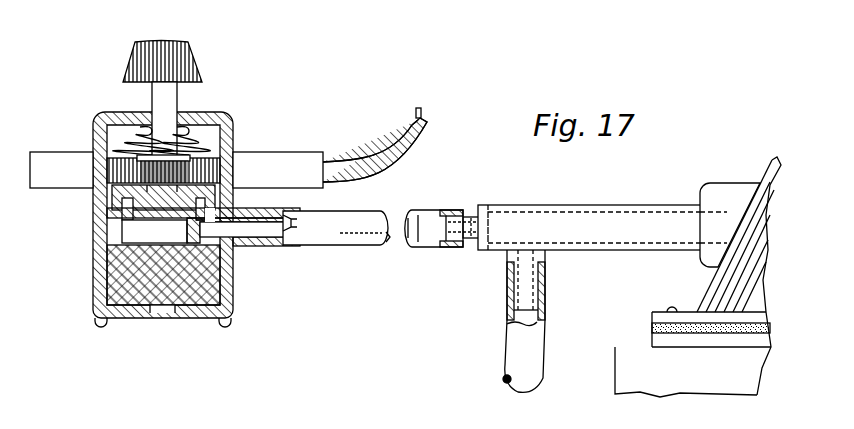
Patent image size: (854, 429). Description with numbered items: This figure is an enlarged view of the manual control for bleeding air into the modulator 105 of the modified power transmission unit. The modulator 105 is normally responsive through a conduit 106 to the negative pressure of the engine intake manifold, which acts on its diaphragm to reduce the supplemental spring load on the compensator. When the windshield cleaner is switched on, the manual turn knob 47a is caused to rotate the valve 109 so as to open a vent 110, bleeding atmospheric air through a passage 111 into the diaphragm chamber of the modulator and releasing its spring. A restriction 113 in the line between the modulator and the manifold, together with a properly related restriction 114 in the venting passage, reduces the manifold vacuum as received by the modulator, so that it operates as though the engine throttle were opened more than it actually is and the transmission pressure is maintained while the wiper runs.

The manual turn knob 47a is at (198, 63).
The valve 109 is at (207, 203).
The vent 110 is at (120, 215).
The passage 111 is at (343, 230).
The restriction 114 is at (445, 212).
The restriction 113 is at (508, 265).
The conduit 106 is at (518, 349).
The modulator 105 is at (710, 379).